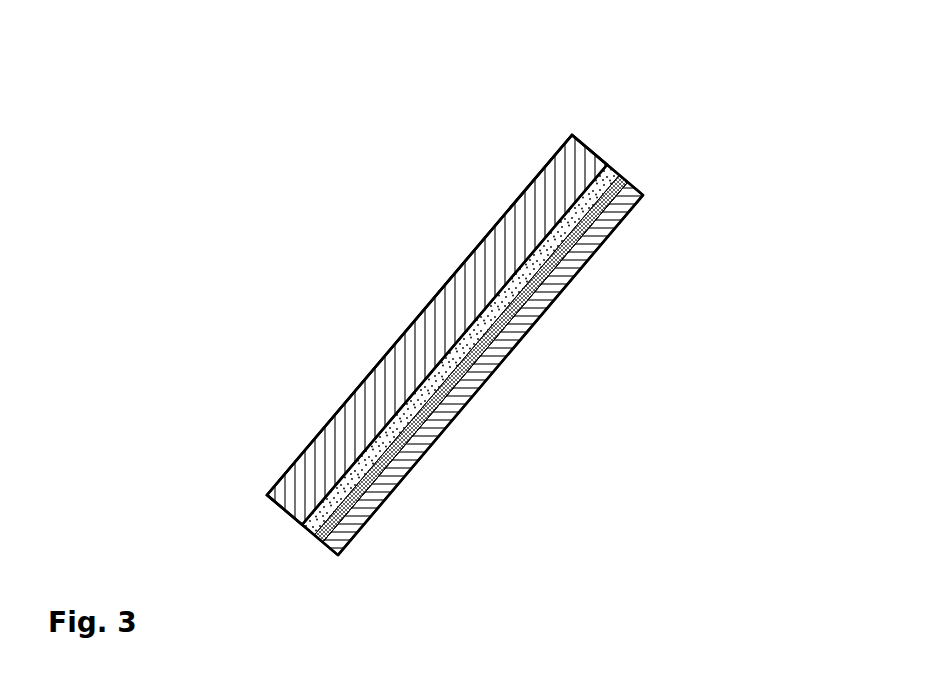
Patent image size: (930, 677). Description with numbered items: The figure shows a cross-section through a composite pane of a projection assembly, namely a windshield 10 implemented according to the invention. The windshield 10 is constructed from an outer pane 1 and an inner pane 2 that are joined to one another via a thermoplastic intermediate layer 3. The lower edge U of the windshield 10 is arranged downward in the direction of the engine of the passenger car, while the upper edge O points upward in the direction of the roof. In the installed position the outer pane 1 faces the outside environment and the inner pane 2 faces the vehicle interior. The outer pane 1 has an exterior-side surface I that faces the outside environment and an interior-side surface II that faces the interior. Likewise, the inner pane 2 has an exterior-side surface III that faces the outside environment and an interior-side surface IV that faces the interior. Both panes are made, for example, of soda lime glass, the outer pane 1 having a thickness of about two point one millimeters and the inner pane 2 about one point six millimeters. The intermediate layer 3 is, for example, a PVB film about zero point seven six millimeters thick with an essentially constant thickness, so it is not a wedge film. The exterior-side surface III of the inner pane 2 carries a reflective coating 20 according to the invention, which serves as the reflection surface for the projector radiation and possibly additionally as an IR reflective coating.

The windshield 10 is at (333, 250).
The outer pane 1 is at (517, 225).
The thermoplastic intermediate layer 3 is at (610, 177).
The reflective coating 20 is at (620, 187).
The inner pane 2 is at (639, 190).
The upper edge O is at (584, 136).
The lower edge U is at (298, 527).
The exterior-side surface I is at (323, 420).
The interior-side surface II is at (318, 502).
The exterior-side surface III is at (450, 400).
The interior-side surface IV is at (430, 460).